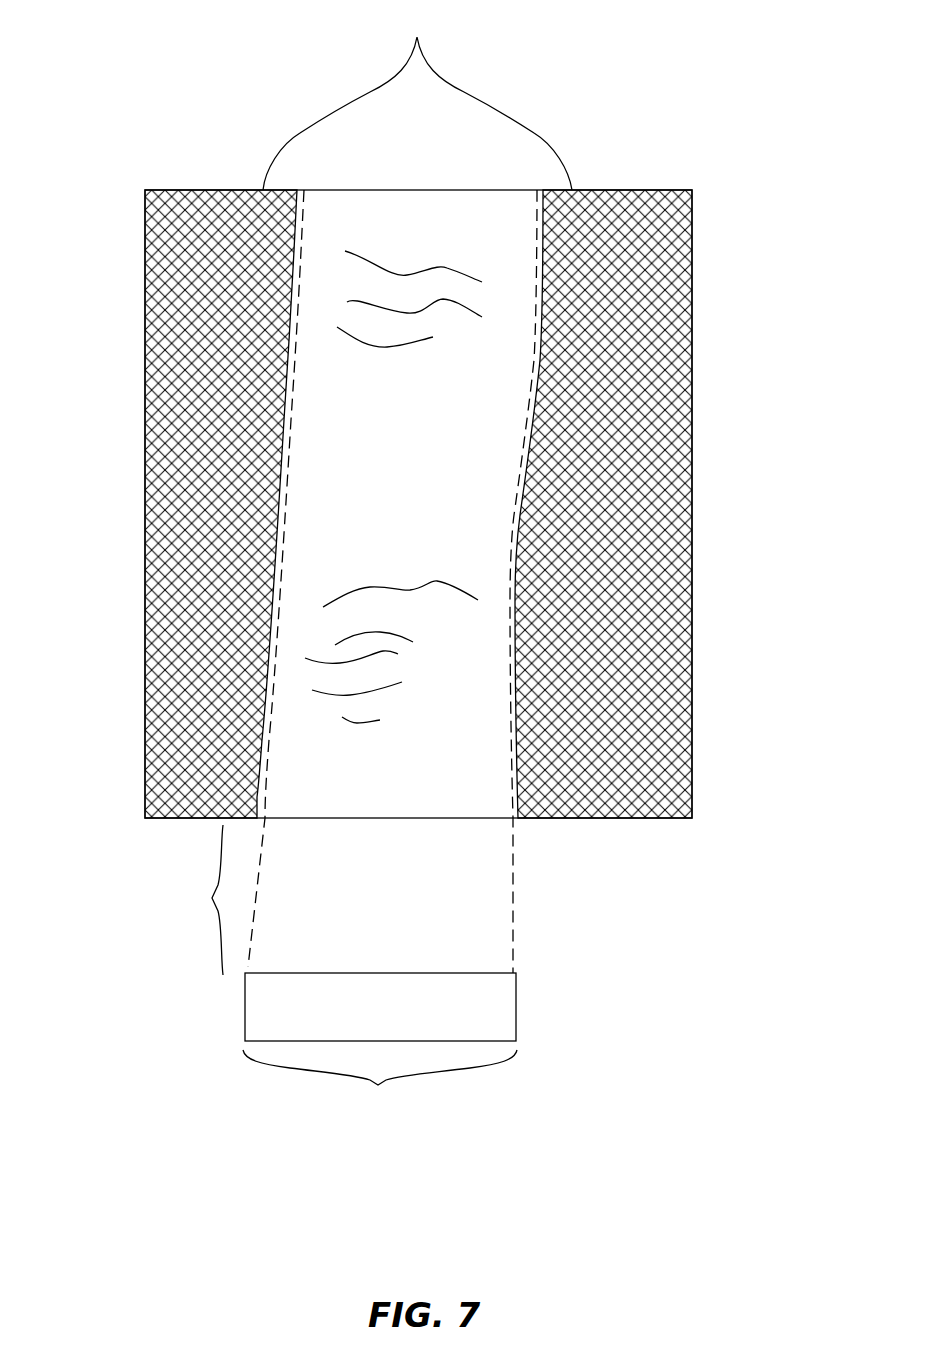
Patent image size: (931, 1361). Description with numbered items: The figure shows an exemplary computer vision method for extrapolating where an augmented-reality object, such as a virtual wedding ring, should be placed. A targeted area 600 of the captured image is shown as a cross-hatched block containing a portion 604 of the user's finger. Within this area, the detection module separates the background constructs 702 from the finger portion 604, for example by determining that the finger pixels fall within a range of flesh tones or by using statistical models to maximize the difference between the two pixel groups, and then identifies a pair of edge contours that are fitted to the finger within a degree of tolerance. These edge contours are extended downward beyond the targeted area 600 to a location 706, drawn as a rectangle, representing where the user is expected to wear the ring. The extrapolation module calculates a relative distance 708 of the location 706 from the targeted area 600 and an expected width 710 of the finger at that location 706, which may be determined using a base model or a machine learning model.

The targeted area 600 is at (692, 405).
The background constructs 702 is at (417, 97).
The portion of finger 604 is at (458, 210).
The location 706 is at (518, 1012).
The relative distance 708 is at (212, 898).
The width 710 is at (378, 1085).